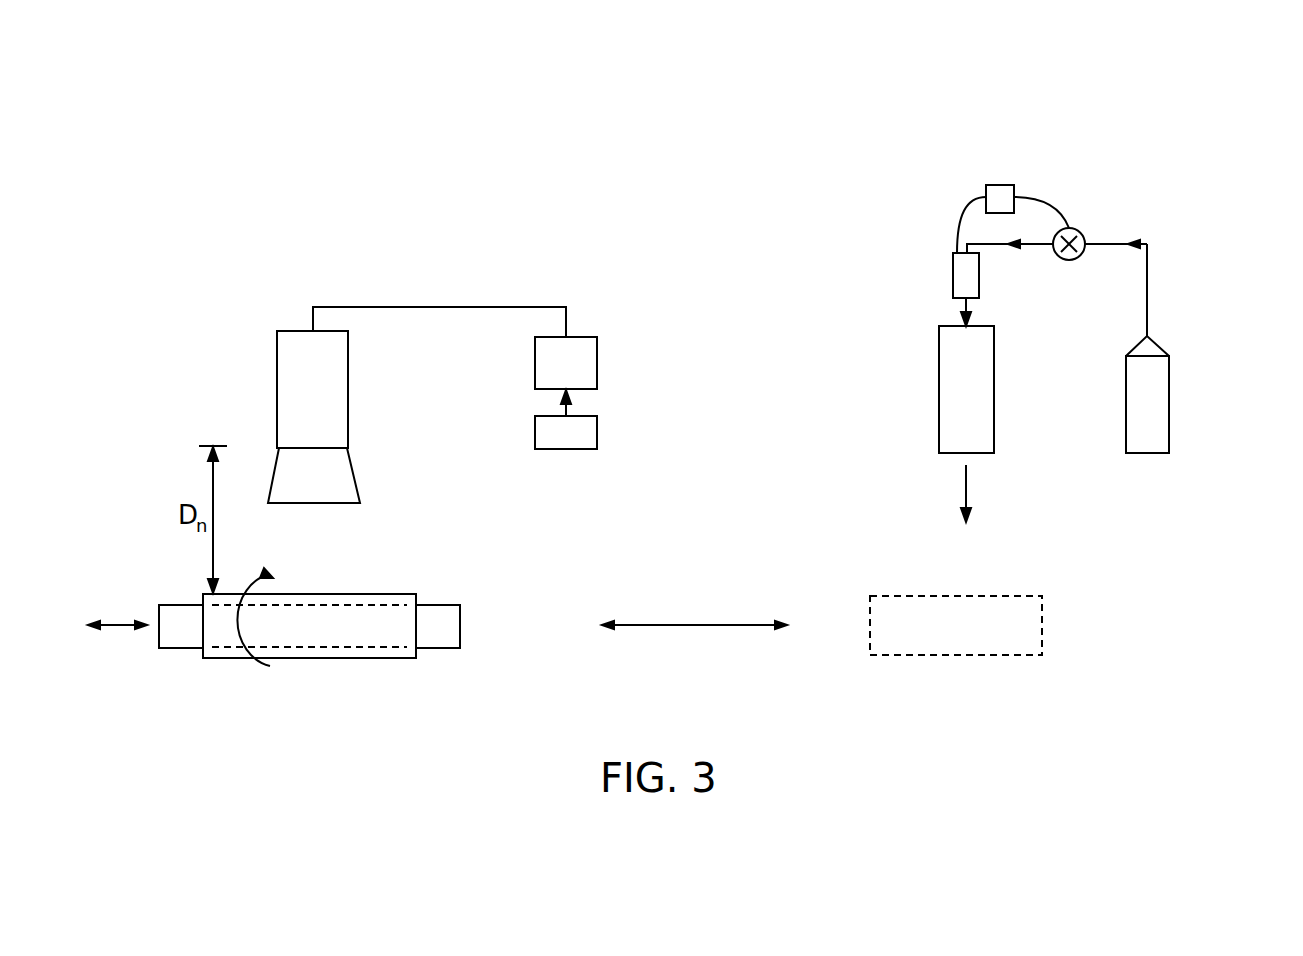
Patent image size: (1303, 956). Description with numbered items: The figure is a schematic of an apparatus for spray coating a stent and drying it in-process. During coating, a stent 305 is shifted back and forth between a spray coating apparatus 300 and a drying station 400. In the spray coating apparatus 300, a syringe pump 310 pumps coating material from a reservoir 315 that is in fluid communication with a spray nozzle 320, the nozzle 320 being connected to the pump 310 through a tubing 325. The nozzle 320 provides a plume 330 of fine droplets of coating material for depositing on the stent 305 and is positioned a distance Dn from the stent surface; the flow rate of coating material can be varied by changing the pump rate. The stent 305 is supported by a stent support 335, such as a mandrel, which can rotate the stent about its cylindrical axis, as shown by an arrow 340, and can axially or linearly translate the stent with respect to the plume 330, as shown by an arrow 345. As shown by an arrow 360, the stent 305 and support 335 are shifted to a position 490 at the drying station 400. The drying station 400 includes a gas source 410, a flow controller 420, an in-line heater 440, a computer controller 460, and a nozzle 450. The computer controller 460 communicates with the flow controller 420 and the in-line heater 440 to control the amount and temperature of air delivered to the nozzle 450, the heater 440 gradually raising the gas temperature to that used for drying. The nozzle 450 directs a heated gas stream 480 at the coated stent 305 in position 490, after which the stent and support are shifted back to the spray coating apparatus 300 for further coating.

The spray coating apparatus 300 is at (463, 566).
The stent 305 is at (382, 594).
The syringe pump 310 is at (597, 358).
The reservoir 315 is at (597, 432).
The spray nozzle 320 is at (338, 376).
The tubing 325 is at (482, 306).
The plume 330 is at (355, 473).
The stent support 335 is at (460, 622).
The arrow 340 is at (240, 668).
The arrow 345 is at (118, 624).
The arrow 360 is at (692, 628).
The drying station 400 is at (1172, 112).
The gas source 410 is at (1169, 398).
The flow controller 420 is at (1076, 228).
The in-line heater 440 is at (953, 278).
The nozzle 450 is at (994, 375).
The computer controller 460 is at (1000, 180).
The heated gas stream 480 is at (966, 488).
The position 490 is at (960, 656).